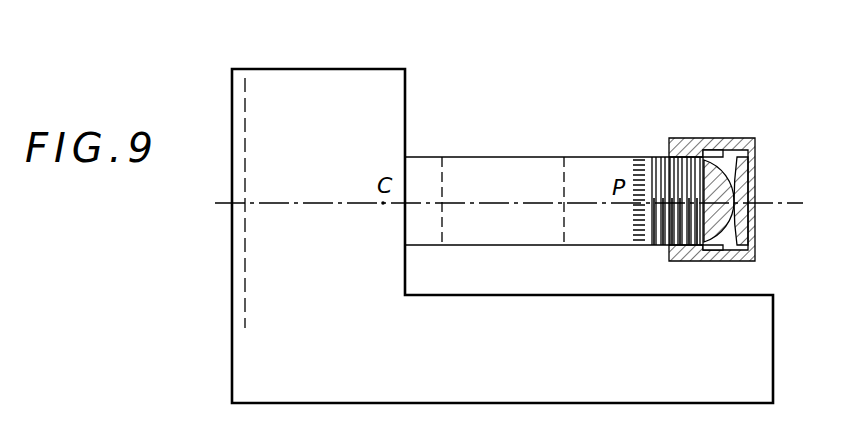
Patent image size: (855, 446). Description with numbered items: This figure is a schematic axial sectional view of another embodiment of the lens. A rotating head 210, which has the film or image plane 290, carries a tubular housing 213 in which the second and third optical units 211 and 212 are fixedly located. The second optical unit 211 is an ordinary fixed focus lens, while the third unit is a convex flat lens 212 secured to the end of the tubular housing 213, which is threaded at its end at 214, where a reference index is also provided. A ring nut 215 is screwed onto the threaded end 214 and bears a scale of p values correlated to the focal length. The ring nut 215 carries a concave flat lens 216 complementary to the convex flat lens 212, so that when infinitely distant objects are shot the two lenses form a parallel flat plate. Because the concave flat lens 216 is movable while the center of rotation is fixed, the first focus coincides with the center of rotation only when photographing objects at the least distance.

The rotating head 210 is at (437, 47).
The film or image plane 290 is at (247, 97).
The tubular housing 213 is at (514, 134).
The second optical unit 211 is at (565, 175).
The threaded end 214 is at (655, 157).
The ring nut 215 is at (757, 143).
The convex flat lens 212 is at (708, 162).
The concave flat lens 216 is at (748, 182).